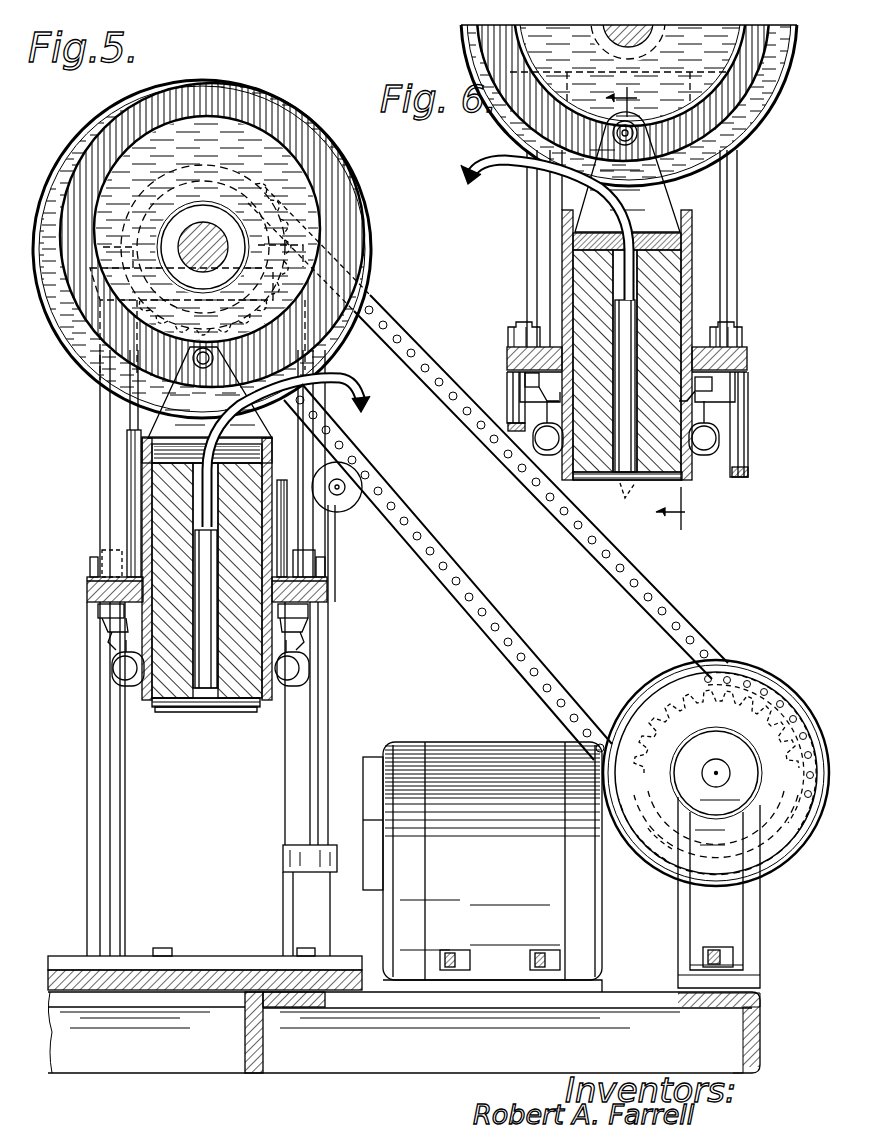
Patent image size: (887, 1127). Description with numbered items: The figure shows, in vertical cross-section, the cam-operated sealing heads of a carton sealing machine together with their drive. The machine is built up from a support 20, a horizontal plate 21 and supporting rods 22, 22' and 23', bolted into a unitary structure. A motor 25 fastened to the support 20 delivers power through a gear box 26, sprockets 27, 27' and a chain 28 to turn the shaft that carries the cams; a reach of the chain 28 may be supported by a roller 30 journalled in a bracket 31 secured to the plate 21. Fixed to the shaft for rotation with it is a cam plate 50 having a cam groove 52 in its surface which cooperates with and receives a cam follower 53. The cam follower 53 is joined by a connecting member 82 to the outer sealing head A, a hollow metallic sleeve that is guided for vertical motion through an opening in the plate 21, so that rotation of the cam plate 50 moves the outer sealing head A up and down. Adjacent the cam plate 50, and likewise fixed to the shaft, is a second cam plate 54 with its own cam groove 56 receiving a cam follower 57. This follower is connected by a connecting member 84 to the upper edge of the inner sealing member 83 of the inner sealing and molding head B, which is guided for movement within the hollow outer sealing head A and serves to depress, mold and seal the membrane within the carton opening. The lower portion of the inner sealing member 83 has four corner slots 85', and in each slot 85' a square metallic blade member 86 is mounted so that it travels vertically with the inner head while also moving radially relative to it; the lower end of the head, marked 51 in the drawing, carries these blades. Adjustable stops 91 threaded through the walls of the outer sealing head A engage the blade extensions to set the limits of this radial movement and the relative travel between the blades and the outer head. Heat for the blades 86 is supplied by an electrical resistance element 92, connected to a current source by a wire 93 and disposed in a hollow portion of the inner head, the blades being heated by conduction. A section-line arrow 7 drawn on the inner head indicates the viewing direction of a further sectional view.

In FIG. 5, the support 20 is at (250, 1050).
In FIG. 5, the horizontal plate 21 is at (86, 590).
In FIG. 6, the horizontal plate 21 is at (747, 360).
In FIG. 5, the supporting rod 22 is at (208, 653).
In FIG. 6, the supporting rod 22' is at (627, 417).
In FIG. 6, the supporting rod 23' is at (636, 248).
In FIG. 5, the motor 25 is at (502, 851).
In FIG. 5, the gear box 26 is at (770, 675).
In FIG. 5, the sprocket 27 is at (694, 724).
In FIG. 5, the sprocket 27' is at (209, 293).
In FIG. 5, the chain 28 is at (653, 580).
In FIG. 5, the roller 30 is at (337, 510).
In FIG. 5, the bracket 31 is at (335, 570).
In FIG. 5, the cam plate 50 is at (376, 248).
In FIG. 6, the cylinder bottom 51 is at (687, 470).
In FIG. 5, the cam groove 52 is at (332, 219).
In FIG. 5, the cam follower 53 is at (145, 402).
In FIG. 6, the cam plate 54 is at (733, 140).
In FIG. 6, the cam groove 56 is at (755, 65).
In FIG. 6, the cam follower 57 is at (613, 133).
In FIG. 6, the section line arrow 7 is at (618, 268).
In FIG. 5, the connecting member 82 is at (153, 420).
In FIG. 5, the inner sealing member 83 is at (250, 525).
In FIG. 6, the inner sealing member 83 is at (583, 278).
In FIG. 6, the connecting member 84 is at (660, 200).
In FIG. 6, the slot 85' is at (630, 503).
In FIG. 5, the blade member 86 is at (177, 708).
In FIG. 6, the blade member 86 is at (600, 478).
In FIG. 5, the adjustable stop 91 is at (117, 640).
In FIG. 6, the adjustable stop 91 is at (730, 438).
In FIG. 5, the electrical resistance element 92 is at (205, 710).
In FIG. 6, the electrical resistance element 92 is at (625, 328).
In FIG. 5, the wire 93 is at (370, 408).
In FIG. 6, the wire 93 is at (473, 187).
In FIG. 5, the outer sealing head A is at (140, 527).
In FIG. 5, the inner sealing and molding head B is at (167, 491).
In FIG. 6, the inner sealing and molding head B is at (670, 300).